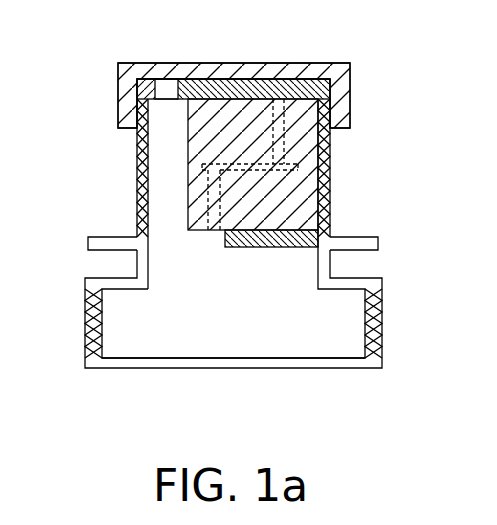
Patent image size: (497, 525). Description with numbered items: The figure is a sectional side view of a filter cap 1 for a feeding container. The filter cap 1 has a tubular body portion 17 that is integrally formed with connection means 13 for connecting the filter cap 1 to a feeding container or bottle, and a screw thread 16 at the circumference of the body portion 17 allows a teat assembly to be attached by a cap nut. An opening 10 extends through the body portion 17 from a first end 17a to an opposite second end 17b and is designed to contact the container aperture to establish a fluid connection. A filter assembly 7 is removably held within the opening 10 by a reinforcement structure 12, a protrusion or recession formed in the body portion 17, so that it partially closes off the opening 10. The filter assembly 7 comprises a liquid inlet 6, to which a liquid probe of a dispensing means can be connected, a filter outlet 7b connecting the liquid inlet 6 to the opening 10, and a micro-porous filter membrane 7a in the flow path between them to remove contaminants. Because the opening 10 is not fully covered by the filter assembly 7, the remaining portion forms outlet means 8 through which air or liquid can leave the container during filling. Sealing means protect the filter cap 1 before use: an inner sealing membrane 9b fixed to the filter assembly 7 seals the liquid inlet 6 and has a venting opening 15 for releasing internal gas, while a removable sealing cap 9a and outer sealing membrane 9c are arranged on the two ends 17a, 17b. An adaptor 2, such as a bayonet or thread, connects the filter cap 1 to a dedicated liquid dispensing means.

The filter cap 1 is at (402, 104).
The adaptor 2 is at (88, 243).
The liquid inlet 6 is at (292, 82).
The filter assembly 7 is at (318, 200).
The filter membrane 7a is at (232, 163).
The filter outlet 7b is at (212, 222).
The outlet means 8 is at (157, 143).
The sealing cap 9a is at (222, 72).
The inner sealing membrane 9b is at (272, 90).
The sealing membrane 9c is at (105, 370).
The opening 10 is at (170, 290).
The reinforcement structure 12 is at (265, 248).
The connection means 13 is at (380, 345).
The venting opening 15 is at (168, 88).
The screw thread 16 is at (137, 198).
The body portion 17 is at (375, 278).
The first end 17a is at (340, 368).
The second end 17b is at (328, 100).